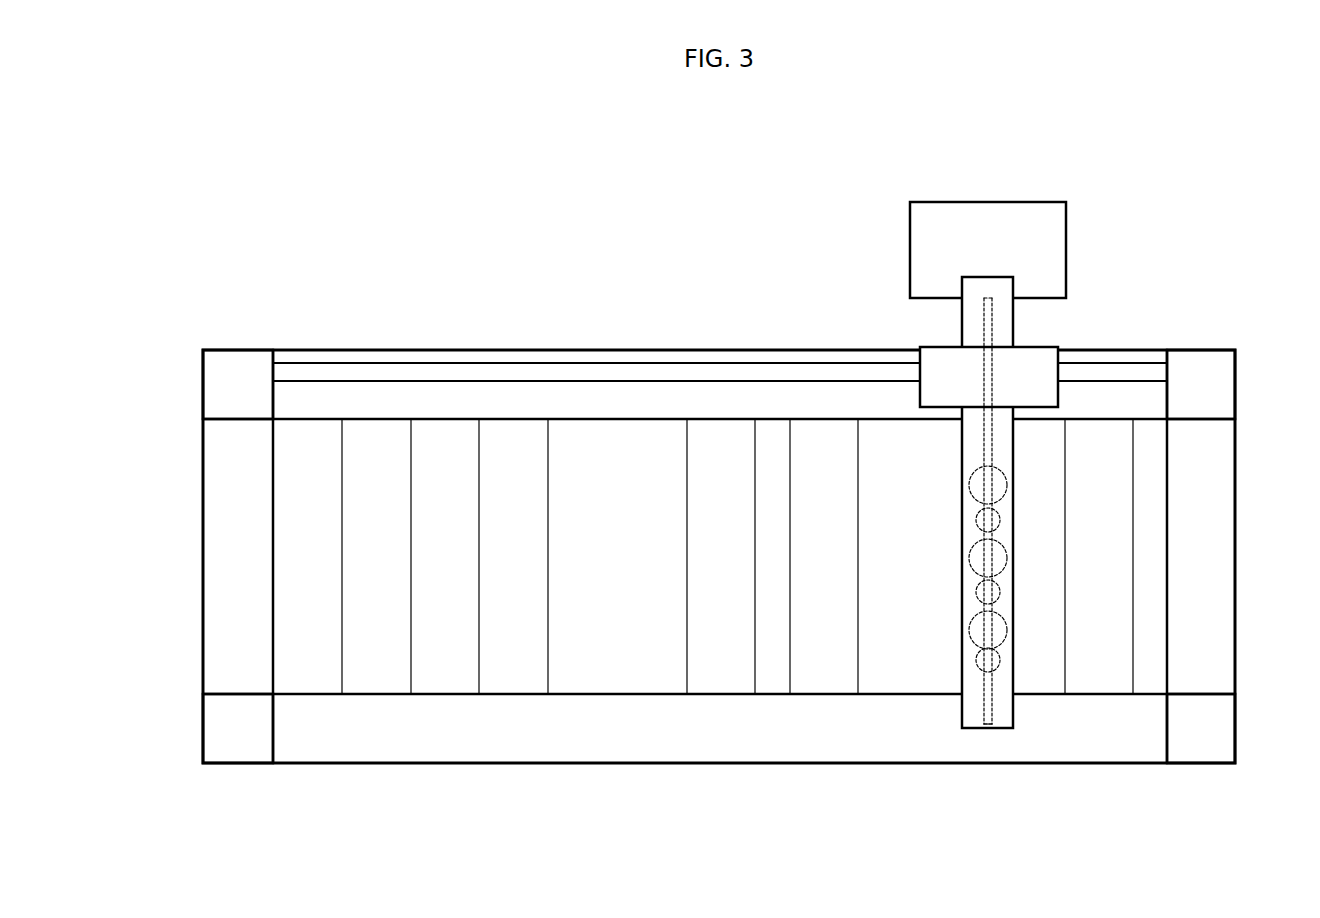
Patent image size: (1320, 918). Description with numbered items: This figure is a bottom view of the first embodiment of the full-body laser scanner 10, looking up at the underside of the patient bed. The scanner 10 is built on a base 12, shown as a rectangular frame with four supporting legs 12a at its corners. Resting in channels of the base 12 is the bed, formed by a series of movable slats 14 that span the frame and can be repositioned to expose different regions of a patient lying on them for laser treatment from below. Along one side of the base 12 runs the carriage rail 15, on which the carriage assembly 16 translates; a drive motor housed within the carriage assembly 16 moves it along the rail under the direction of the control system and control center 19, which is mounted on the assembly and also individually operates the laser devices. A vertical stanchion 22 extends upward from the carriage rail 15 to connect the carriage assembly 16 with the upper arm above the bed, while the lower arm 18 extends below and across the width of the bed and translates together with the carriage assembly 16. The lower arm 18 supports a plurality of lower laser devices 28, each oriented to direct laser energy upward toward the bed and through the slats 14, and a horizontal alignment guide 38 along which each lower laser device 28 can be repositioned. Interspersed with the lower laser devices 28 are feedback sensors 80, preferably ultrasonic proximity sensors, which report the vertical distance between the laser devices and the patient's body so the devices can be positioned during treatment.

The scanner 10 is at (258, 307).
The base 12 is at (214, 512).
The supporting legs 12a is at (222, 382).
The movable slats 14 is at (516, 438).
The carriage rail 15 is at (720, 375).
The carriage assembly 16 is at (958, 382).
The lower arm 18 is at (1012, 706).
The control system and control center 19 is at (1060, 245).
The vertical stanchion 22 is at (997, 322).
The lower laser devices 28 is at (1003, 485).
The horizontal alignment guide 38 is at (982, 724).
The feedback sensors 80 is at (977, 520).